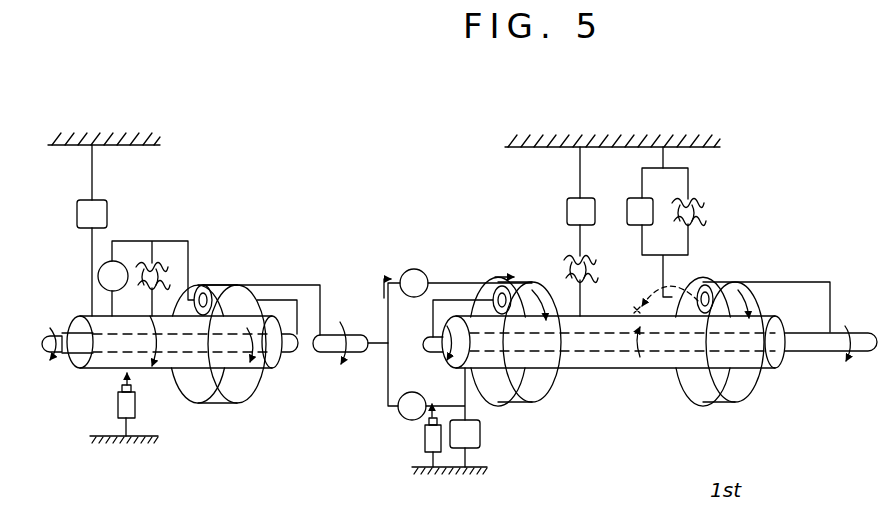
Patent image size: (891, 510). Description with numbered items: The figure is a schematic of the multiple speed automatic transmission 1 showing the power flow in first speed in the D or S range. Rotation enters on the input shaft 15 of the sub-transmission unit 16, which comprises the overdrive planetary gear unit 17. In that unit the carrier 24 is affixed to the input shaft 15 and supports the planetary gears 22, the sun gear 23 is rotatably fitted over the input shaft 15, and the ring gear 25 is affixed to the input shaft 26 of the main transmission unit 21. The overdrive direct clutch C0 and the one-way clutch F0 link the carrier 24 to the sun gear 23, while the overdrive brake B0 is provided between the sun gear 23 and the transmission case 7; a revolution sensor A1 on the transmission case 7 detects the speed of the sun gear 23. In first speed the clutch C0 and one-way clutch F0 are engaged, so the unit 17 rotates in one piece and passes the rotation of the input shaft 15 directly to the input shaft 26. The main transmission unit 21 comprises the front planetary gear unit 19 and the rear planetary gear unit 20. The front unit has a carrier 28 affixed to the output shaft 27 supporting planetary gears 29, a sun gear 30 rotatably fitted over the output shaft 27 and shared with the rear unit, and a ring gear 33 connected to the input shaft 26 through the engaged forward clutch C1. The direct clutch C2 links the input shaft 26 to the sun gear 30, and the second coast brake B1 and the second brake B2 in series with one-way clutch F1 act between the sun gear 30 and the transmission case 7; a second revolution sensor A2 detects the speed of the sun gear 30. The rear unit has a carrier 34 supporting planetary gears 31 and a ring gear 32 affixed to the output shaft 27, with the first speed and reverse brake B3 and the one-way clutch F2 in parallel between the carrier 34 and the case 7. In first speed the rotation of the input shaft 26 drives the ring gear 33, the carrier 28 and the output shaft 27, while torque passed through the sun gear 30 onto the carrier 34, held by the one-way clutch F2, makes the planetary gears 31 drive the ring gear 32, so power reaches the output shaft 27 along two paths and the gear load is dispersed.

The multiple speed automatic transmission 1 is at (395, 95).
The transmission case 7 is at (118, 146).
The input shaft 15 is at (65, 338).
The sub-transmission unit 16 is at (216, 244).
The overdrive planetary gear unit 17 is at (248, 281).
The front planetary gear unit 19 is at (521, 268).
The rear planetary gear unit 20 is at (734, 257).
The main transmission unit 21 is at (493, 238).
The planetary gears 22 is at (205, 285).
The sun gear 23 is at (156, 370).
The carrier 24 is at (190, 242).
The ring gear 25 is at (253, 385).
The input shaft of the main transmission unit 26 is at (357, 352).
The output shaft 27 is at (822, 351).
The carrier 28 is at (455, 297).
The planetary gears 29 is at (498, 287).
The sun gear 30 is at (622, 370).
The planetary gears 31 is at (703, 284).
The ring gear 32 is at (750, 283).
The ring gear 33 is at (531, 400).
The carrier 34 is at (667, 285).
The overdrive brake B0 is at (92, 230).
The overdrive direct clutch C0 is at (113, 276).
The one-way clutch F0 is at (144, 290).
The revolution sensor A1 is at (118, 407).
The forward clutch C1 is at (466, 283).
The direct clutch C2 is at (431, 394).
The second coast brake B1 is at (465, 443).
The revolution sensor A2 is at (425, 438).
The second brake B2 is at (581, 201).
The one-way clutch F1 is at (588, 286).
The first speed and reverse brake B3 is at (657, 222).
The one-way clutch F2 is at (704, 216).